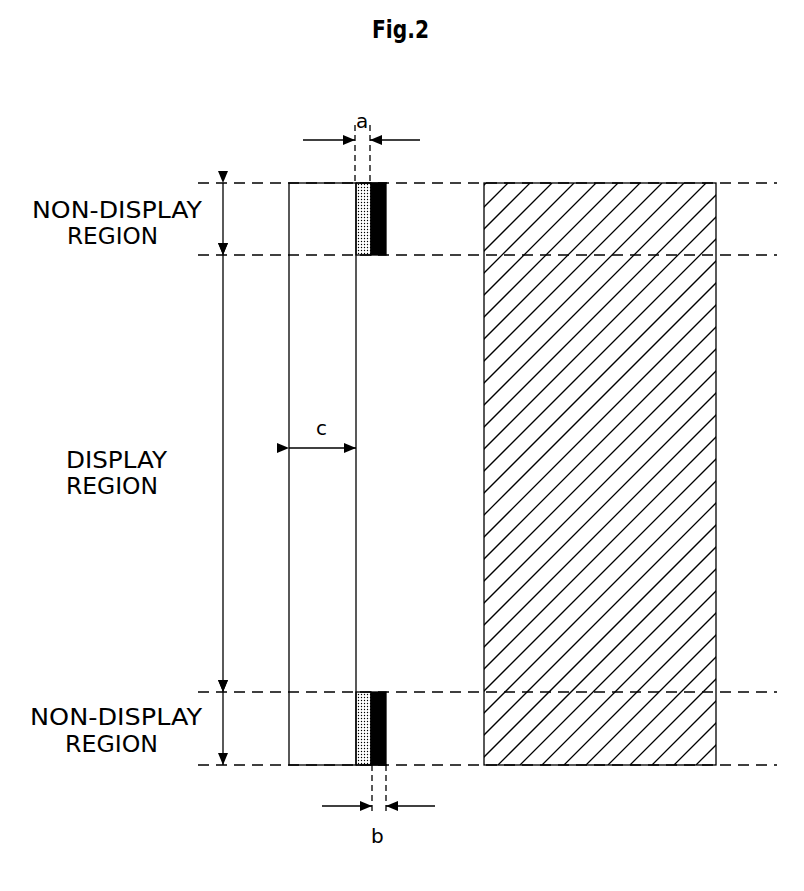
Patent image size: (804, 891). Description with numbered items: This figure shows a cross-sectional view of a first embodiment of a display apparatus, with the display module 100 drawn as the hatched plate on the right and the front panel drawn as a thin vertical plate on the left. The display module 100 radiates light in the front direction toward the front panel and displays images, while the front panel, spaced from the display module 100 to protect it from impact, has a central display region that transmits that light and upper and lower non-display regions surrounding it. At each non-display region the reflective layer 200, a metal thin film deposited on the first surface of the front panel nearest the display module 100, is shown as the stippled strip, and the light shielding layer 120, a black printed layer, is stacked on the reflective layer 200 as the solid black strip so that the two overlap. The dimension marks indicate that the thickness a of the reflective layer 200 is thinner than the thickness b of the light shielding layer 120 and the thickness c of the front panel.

The display module 100 is at (603, 197).
The light shielding layer 120 is at (387, 737).
The reflective layer 200 is at (363, 692).